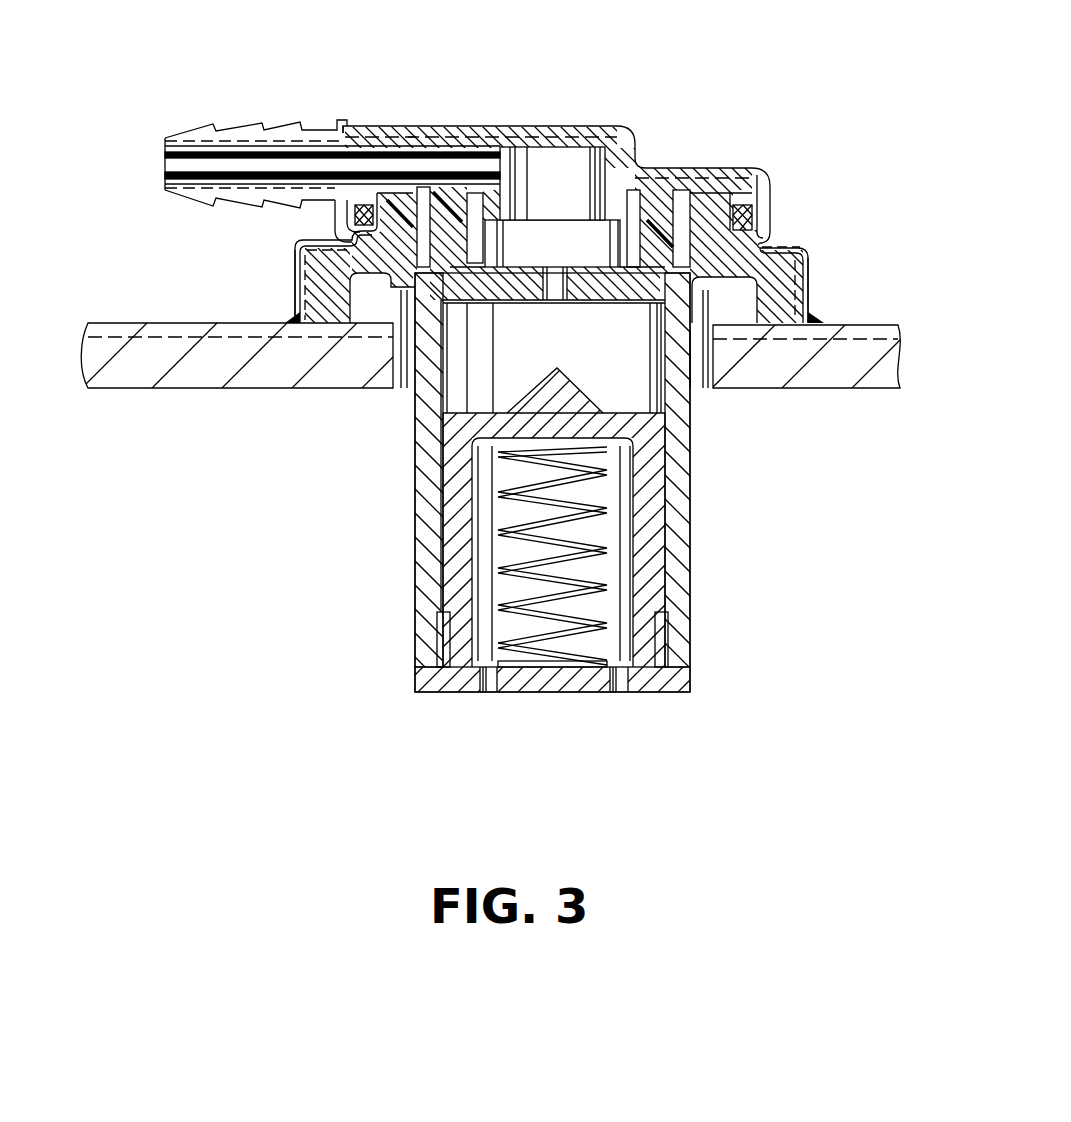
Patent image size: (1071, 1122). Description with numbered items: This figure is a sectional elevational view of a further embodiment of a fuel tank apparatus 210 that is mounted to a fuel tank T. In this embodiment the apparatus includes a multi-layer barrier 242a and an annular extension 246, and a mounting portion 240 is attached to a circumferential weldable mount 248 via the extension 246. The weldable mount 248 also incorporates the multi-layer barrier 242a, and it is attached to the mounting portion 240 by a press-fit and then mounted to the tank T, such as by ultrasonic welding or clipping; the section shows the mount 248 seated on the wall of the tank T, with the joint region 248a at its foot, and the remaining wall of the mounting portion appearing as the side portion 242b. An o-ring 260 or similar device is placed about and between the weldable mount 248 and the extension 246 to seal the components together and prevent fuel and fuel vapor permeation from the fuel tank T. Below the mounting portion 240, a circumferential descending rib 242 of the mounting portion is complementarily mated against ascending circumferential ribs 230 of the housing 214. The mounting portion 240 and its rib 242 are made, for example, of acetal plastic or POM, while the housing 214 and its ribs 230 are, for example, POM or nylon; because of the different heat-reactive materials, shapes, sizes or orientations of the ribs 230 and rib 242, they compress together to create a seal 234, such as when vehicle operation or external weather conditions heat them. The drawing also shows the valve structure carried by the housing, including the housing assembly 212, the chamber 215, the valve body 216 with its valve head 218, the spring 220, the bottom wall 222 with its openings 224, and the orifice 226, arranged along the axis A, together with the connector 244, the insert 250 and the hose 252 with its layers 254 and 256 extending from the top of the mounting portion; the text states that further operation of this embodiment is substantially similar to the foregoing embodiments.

The fuel tank apparatus 210 is at (578, 58).
The valve housing 212 is at (722, 470).
The housing 214 is at (690, 628).
The valve chamber 215 is at (500, 364).
The valve body 216 is at (633, 413).
The valve head 218 is at (553, 368).
The spring 220 is at (605, 540).
The housing bottom wall 222 is at (418, 682).
The bottom openings 224 is at (618, 692).
The valve orifice 226 is at (560, 273).
The ascending circumferential ribs 230 is at (468, 190).
The seal 234 is at (692, 300).
The mounting portion 240 is at (738, 100).
The circumferential descending rib 242 is at (663, 217).
The barrier 242a is at (766, 165).
The cover side wall 242b is at (790, 248).
The hose connector 244 is at (372, 185).
The annular extension 246 is at (753, 221).
The circumferential weldable mount 248 is at (808, 285).
The weld joint 248a is at (413, 137).
The insert 250 is at (537, 199).
The hose 252 is at (197, 133).
The hose outer layer 254 is at (168, 154).
The hose inner layer 256 is at (170, 175).
The o-ring 260 is at (772, 183).
The axis A is at (696, 372).
The tank T is at (808, 372).